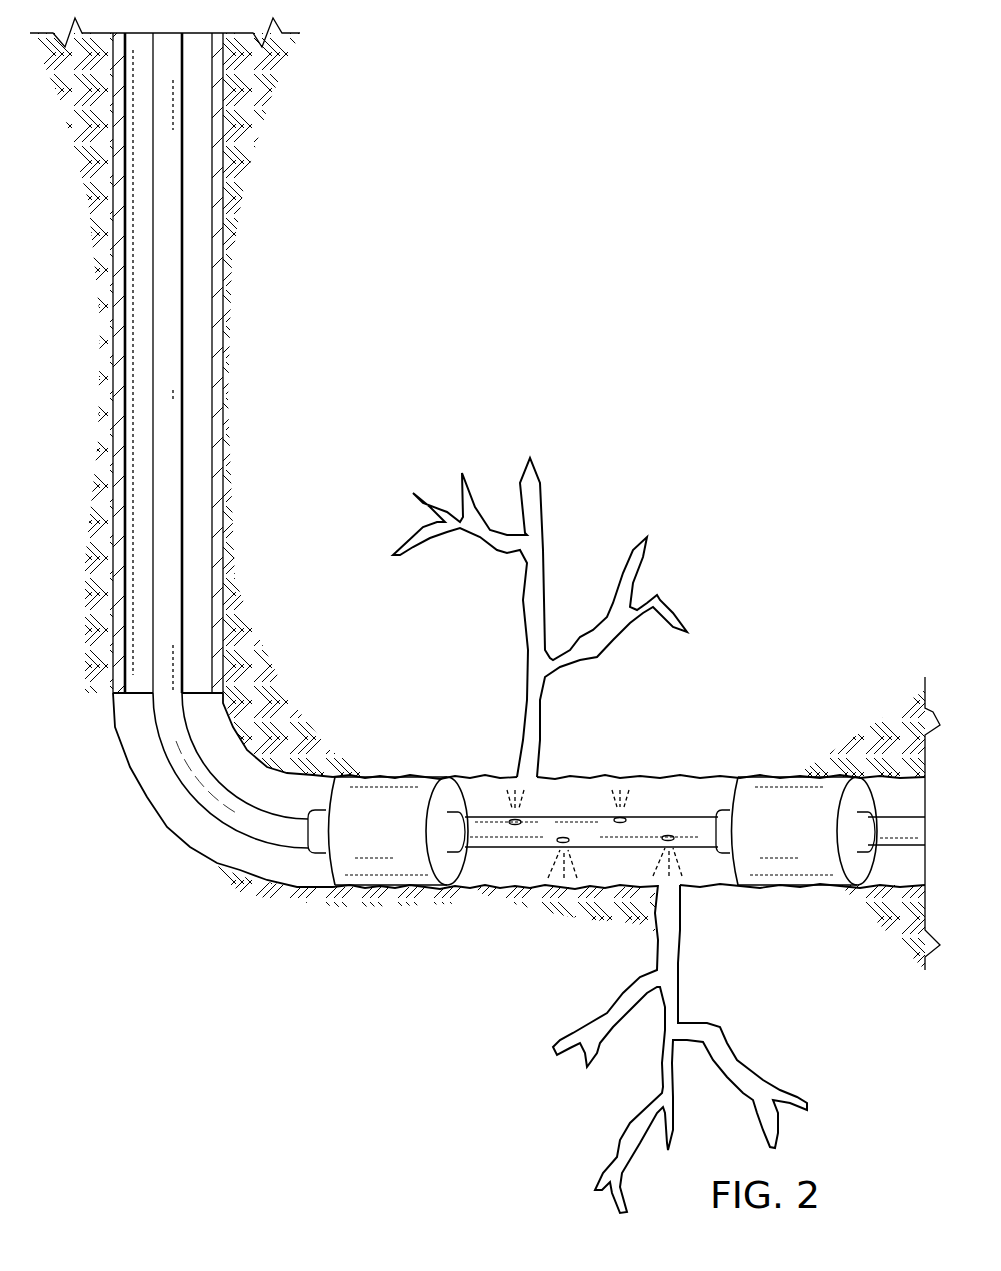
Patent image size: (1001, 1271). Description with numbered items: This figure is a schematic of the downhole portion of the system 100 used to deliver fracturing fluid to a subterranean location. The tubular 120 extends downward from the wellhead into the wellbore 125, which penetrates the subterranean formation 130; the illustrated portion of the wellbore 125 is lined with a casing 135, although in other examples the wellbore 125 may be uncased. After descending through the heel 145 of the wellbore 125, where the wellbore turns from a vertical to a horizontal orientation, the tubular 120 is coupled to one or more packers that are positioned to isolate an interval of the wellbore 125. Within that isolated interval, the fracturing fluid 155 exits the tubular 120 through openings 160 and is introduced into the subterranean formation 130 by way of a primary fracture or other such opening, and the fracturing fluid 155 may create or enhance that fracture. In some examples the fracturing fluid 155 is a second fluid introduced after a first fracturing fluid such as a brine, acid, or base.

The system 100 is at (563, 293).
The tubular 120 is at (212, 338).
The wellbore 125 is at (223, 261).
The subterranean formation 130 is at (842, 606).
The casing 135 is at (215, 462).
The heel 145 is at (165, 825).
The fracturing fluid 155 is at (525, 811).
The openings 160 is at (670, 836).